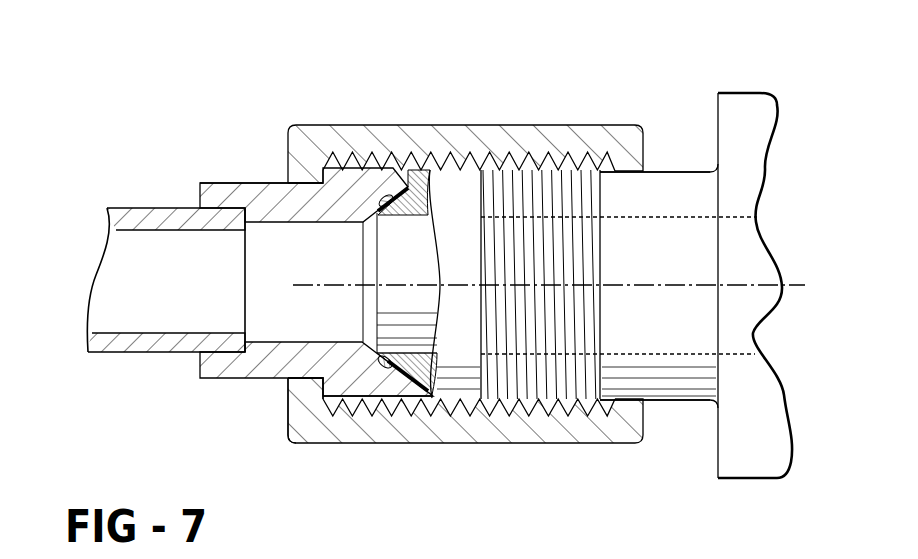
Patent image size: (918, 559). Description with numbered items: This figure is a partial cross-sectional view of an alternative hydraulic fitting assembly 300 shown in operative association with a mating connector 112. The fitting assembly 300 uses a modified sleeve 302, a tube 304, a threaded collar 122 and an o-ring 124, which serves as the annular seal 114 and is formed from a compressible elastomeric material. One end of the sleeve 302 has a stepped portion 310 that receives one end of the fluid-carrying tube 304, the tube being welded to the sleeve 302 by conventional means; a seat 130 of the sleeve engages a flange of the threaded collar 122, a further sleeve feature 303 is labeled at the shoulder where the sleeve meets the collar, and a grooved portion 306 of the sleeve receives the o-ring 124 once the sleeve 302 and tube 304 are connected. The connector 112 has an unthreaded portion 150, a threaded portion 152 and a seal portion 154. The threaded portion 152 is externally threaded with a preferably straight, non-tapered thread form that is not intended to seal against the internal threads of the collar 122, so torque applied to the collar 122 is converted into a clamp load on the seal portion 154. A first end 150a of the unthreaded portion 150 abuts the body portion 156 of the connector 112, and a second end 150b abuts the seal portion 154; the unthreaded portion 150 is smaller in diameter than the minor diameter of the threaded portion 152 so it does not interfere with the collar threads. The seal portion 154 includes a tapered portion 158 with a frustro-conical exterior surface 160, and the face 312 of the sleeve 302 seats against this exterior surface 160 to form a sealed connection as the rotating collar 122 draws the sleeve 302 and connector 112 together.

The fitting assembly 300 is at (110, 72).
The male connector 112 is at (756, 72).
The annular seal 114 is at (383, 148).
The threaded collar 122 is at (303, 126).
The o-ring 124 is at (396, 356).
The seat 130 is at (313, 392).
The unthreaded portion 150 is at (611, 273).
The first end of unthreaded portion 150a is at (648, 193).
The second end of unthreaded portion 150b is at (473, 405).
The threaded portion 152 is at (565, 262).
The seal portion 154 is at (406, 206).
The body portion 156 is at (742, 333).
The tapered portion 158 is at (464, 377).
The frustro-conical exterior surface 160 is at (404, 170).
The sleeve 302 is at (240, 368).
The gland shoulder 303 is at (284, 180).
The tube 304 is at (150, 229).
The grooved portion 306 is at (386, 400).
The stepped portion 310 is at (215, 183).
The face 312 is at (383, 356).